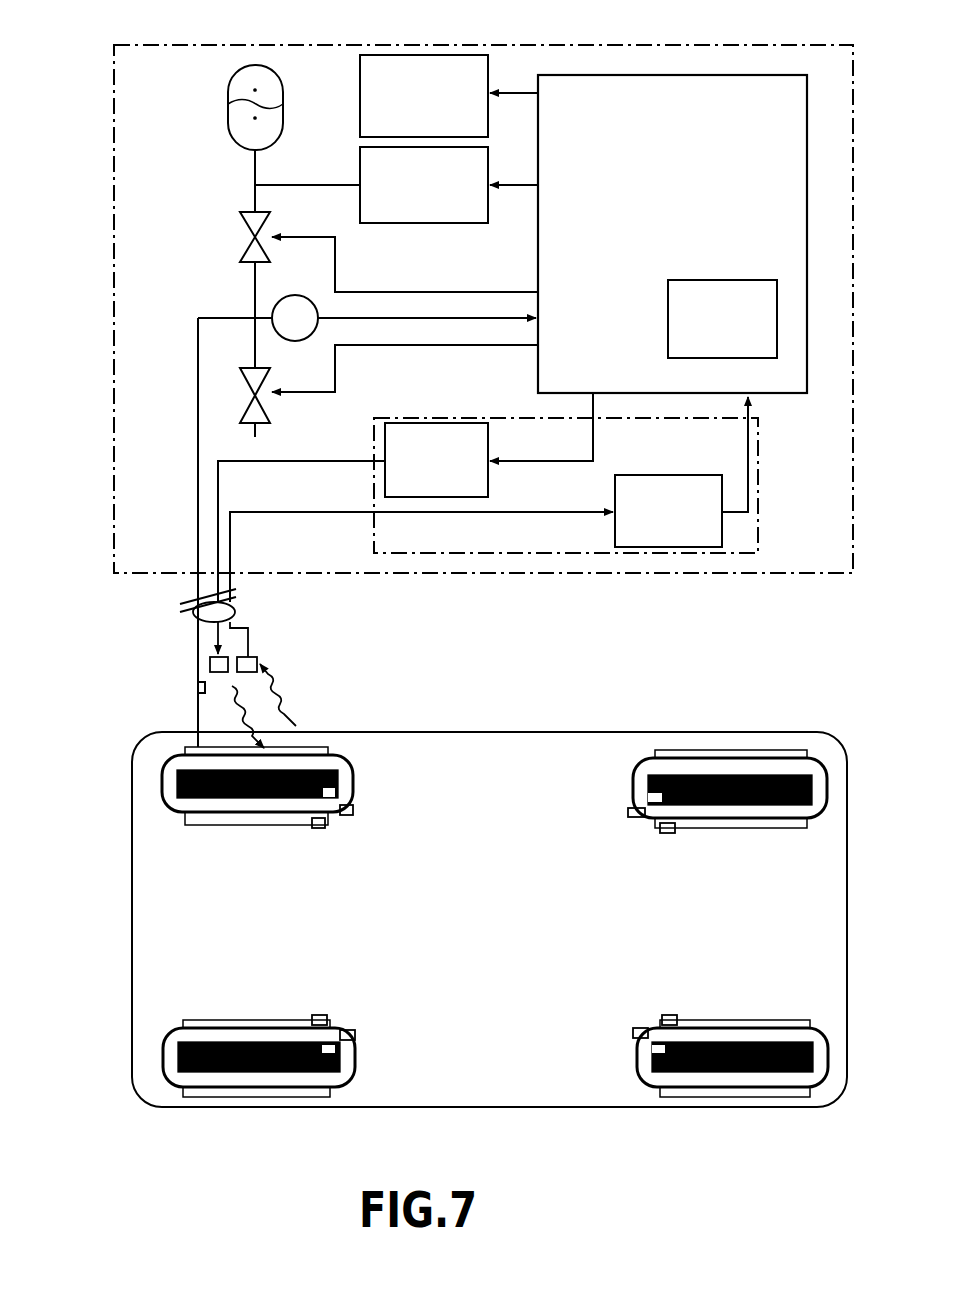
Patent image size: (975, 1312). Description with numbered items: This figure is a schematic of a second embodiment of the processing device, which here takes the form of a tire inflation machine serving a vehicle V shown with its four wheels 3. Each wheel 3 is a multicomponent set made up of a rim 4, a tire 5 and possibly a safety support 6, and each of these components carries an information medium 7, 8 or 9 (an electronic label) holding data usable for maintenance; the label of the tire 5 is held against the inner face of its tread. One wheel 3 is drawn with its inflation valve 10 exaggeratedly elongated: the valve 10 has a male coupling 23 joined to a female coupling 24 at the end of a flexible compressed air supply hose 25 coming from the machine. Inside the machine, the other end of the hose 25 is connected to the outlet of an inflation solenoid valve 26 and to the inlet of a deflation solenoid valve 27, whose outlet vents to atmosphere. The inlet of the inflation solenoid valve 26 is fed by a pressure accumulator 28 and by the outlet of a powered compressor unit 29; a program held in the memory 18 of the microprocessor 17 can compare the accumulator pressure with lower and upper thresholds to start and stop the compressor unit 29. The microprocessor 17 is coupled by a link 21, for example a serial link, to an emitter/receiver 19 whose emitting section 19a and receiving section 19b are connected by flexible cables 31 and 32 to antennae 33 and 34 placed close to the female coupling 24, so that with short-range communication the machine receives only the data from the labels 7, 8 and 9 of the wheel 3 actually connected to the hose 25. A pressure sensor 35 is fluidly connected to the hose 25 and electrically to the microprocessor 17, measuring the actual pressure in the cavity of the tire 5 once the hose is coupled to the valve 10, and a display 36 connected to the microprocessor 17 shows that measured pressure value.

The wheel 3 is at (158, 797).
The rim 4 is at (254, 823).
The tire 5 is at (352, 763).
The safety support 6 is at (206, 800).
The information medium 7 is at (316, 829).
The information medium 8 is at (348, 816).
The information medium 9 is at (336, 793).
The inflation valve 10 is at (198, 736).
The microprocessor 17 is at (650, 75).
The memory 18 is at (732, 288).
The emitter/receiver 19 is at (528, 577).
The emitting section 19a is at (437, 432).
The receiving section 19b is at (685, 548).
The link 21 is at (740, 406).
The male coupling 23 is at (195, 695).
The female coupling 24 is at (196, 686).
The flexible compressed air supply hose 25 is at (198, 638).
The inflation solenoid valve 26 is at (240, 243).
The deflation solenoid valve 27 is at (268, 410).
The pressure accumulator 28 is at (228, 124).
The powered compressor unit 29 is at (420, 224).
The flexible cable 31 is at (312, 461).
The flexible cable 32 is at (312, 512).
The antenna 33 is at (236, 652).
The antenna 34 is at (258, 665).
The pressure sensor 35 is at (297, 296).
The display 36 is at (360, 78).
The vehicle V is at (551, 730).